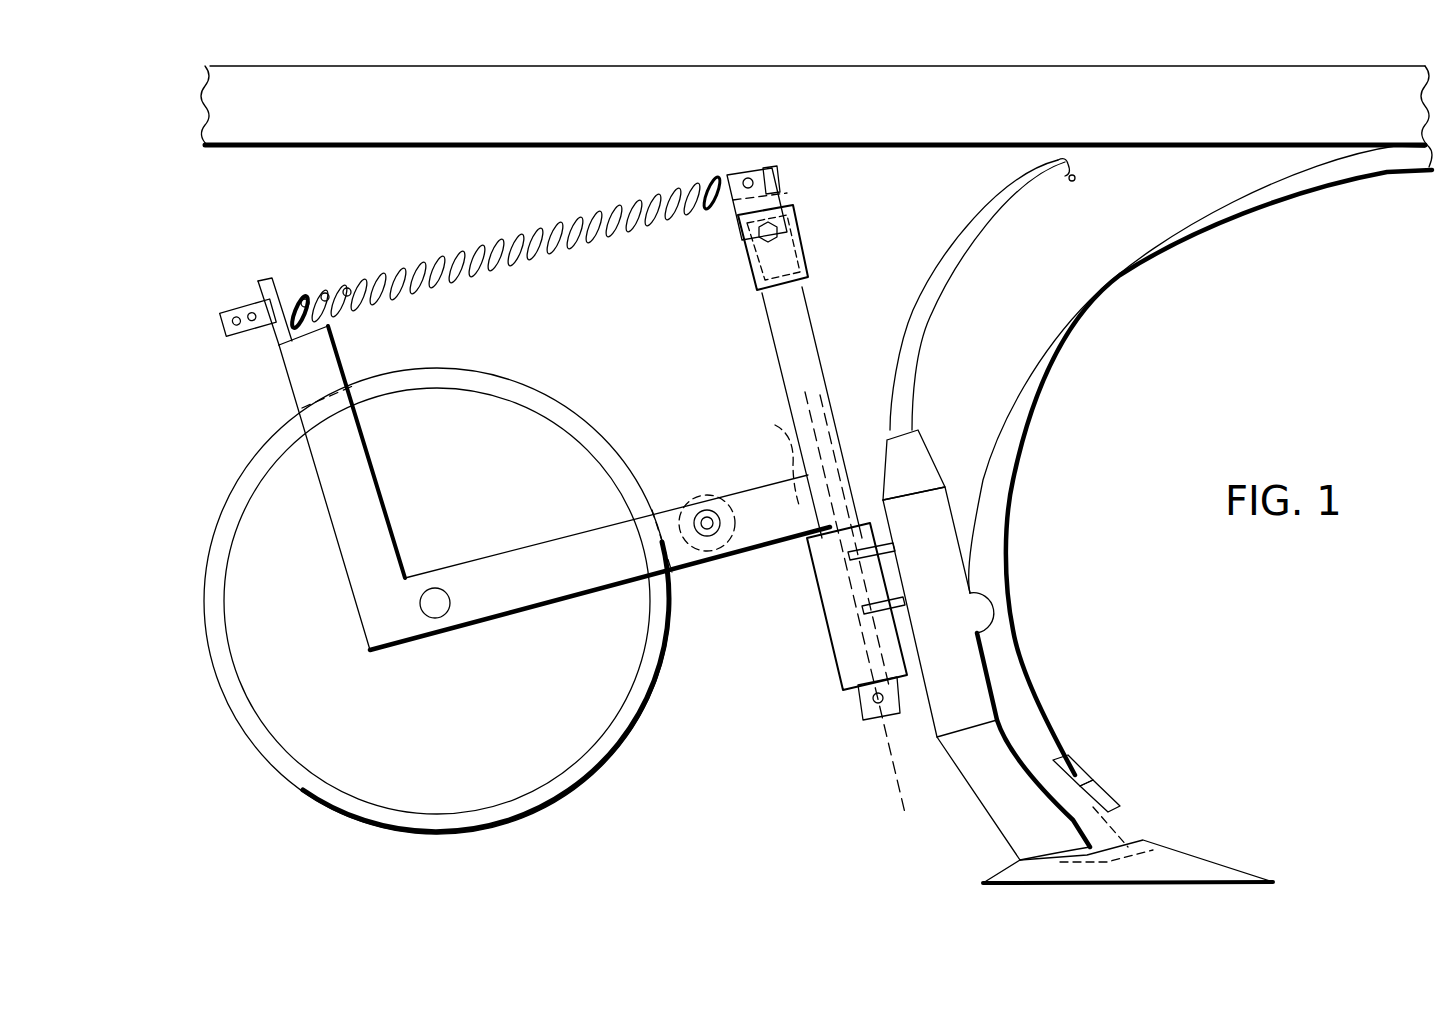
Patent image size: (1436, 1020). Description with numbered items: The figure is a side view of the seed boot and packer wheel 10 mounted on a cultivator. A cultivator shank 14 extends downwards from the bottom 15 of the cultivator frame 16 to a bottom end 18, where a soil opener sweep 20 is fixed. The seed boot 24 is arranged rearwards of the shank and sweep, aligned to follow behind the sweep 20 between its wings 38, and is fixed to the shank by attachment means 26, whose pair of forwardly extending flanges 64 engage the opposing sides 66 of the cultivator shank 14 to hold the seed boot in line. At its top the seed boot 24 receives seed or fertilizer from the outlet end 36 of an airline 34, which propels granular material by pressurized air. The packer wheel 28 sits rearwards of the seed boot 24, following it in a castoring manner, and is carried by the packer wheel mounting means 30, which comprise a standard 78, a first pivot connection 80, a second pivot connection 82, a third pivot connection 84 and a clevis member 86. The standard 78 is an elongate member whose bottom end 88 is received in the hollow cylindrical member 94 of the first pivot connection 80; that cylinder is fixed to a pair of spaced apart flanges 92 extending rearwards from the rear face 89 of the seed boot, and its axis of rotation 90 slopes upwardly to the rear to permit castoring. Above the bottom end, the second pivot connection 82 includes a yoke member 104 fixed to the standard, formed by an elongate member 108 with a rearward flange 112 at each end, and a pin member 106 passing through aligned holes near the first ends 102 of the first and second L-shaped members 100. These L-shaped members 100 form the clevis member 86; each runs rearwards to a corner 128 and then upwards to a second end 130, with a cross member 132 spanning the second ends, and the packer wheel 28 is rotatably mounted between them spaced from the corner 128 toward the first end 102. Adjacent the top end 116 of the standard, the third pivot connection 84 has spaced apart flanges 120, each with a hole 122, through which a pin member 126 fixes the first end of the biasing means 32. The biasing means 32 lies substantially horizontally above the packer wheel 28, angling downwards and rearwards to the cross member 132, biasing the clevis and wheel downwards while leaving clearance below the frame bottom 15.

The seed boot and packer wheel 10 is at (398, 858).
The cultivator shank 14 is at (1083, 340).
The bottom of the cultivator frame 15 is at (446, 150).
The cultivator frame 16 is at (324, 123).
The bottom end of the cultivator shank 18 is at (1160, 840).
The soil opener sweep 20 is at (1222, 860).
The seed boot 24 is at (956, 776).
The attachment means 26 is at (1087, 771).
The packer wheel 28 is at (598, 780).
The packer wheel mounting means 30 is at (746, 685).
The biasing means 32 is at (554, 264).
The airline 34 is at (979, 284).
The outlet end of the airline 36 is at (925, 442).
The wings of the sweep 38 is at (1002, 860).
The forwardly extending flanges 64 is at (1002, 594).
The opposing sides of the cultivator shank 66 is at (1001, 530).
The standard 78 is at (775, 343).
The first pivot connection 80 is at (829, 660).
The second pivot connection 82 is at (733, 574).
The third pivot connection 84 is at (731, 224).
The clevis member 86 is at (455, 644).
The bottom end of the standard 88 is at (860, 705).
The rear face of the seed boot 89 is at (922, 688).
The axis of rotation of the first pivot connection 90 is at (821, 444).
The spaced apart flanges 92 is at (886, 533).
The hollow cylindrical member 94 is at (824, 614).
The L-shaped members 100 is at (538, 605).
The first ends of the L-shaped members 102 is at (740, 494).
The yoke member 104 is at (751, 470).
The pin member 106 is at (708, 516).
The elongate member of the yoke 108 is at (790, 434).
The flange of the yoke 112 is at (757, 522).
The top end of the standard 116 is at (795, 249).
The spaced apart flanges of the third pivot connection 120 is at (783, 199).
The hole in flange 122 is at (765, 169).
The pin member of the third pivot connection 126 is at (746, 179).
The corner of the L-shaped member 128 is at (375, 623).
The second end of the L-shaped member 130 is at (309, 358).
The cross member 132 is at (333, 319).